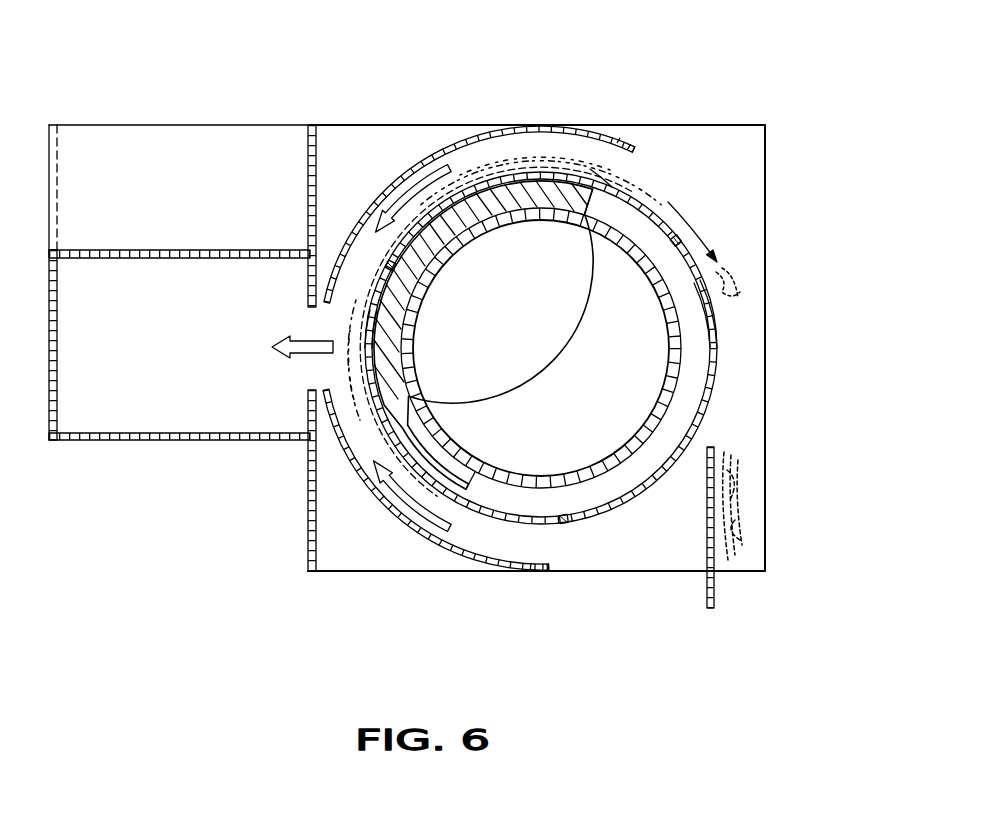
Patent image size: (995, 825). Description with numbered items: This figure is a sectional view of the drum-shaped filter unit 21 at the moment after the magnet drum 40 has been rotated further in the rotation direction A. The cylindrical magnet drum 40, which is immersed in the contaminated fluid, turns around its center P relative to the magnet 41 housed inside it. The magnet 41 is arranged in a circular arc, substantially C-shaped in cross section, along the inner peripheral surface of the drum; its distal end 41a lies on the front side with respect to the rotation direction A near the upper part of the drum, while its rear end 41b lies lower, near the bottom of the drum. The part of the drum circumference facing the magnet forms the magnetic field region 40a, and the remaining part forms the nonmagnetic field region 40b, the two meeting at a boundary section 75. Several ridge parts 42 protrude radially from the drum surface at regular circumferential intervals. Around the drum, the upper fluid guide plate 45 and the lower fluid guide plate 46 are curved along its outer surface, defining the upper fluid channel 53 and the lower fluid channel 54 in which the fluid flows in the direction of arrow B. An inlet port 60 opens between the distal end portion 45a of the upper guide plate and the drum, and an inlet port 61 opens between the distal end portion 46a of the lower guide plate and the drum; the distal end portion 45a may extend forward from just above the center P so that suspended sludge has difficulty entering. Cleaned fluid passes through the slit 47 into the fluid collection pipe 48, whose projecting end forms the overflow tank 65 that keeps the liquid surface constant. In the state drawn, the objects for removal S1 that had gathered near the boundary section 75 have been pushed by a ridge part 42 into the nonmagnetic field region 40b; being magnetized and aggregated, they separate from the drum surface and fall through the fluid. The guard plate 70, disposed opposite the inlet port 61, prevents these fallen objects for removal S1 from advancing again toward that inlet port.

The drum-shaped filter unit 21 is at (607, 103).
The magnet drum 40 is at (652, 470).
The magnetic field region 40a is at (306, 378).
The nonmagnetic field region 40b is at (722, 342).
The magnet 41 is at (540, 190).
The distal end 41a is at (613, 207).
The rear end 41b is at (464, 484).
The ridge part 42 is at (374, 255).
The upper fluid guide plate 45 is at (428, 158).
The distal end portion 45a is at (637, 152).
The lower fluid guide plate 46 is at (396, 525).
The distal end portion 46a is at (550, 578).
The slit 47 is at (304, 392).
The fluid collection pipe 48 is at (135, 440).
The upper fluid channel 53 is at (476, 162).
The lower fluid channel 54 is at (461, 537).
The inlet port 60 is at (640, 178).
The inlet port 61 is at (538, 546).
The overflow tank 65 is at (173, 143).
The guard plate 70 is at (716, 450).
The boundary section 75 is at (600, 182).
The objects for removal S1 is at (356, 318).
The center of the magnet drum P is at (538, 348).
The rotation direction A is at (703, 220).
The fluid flow direction B is at (398, 203).